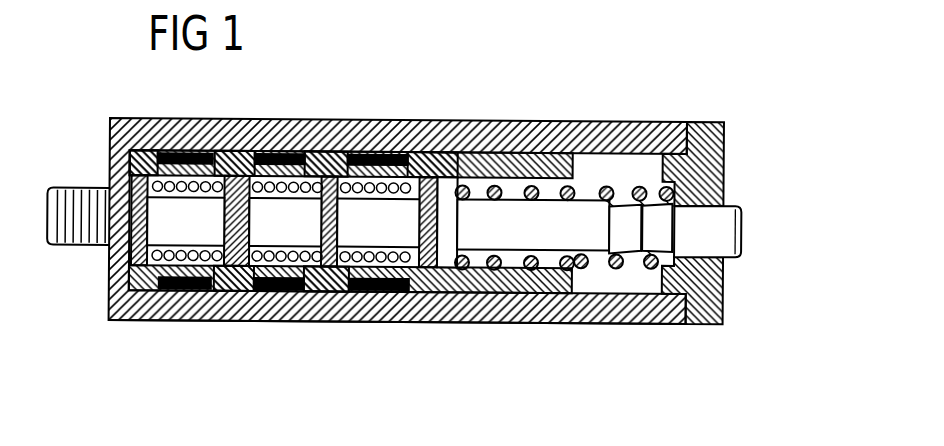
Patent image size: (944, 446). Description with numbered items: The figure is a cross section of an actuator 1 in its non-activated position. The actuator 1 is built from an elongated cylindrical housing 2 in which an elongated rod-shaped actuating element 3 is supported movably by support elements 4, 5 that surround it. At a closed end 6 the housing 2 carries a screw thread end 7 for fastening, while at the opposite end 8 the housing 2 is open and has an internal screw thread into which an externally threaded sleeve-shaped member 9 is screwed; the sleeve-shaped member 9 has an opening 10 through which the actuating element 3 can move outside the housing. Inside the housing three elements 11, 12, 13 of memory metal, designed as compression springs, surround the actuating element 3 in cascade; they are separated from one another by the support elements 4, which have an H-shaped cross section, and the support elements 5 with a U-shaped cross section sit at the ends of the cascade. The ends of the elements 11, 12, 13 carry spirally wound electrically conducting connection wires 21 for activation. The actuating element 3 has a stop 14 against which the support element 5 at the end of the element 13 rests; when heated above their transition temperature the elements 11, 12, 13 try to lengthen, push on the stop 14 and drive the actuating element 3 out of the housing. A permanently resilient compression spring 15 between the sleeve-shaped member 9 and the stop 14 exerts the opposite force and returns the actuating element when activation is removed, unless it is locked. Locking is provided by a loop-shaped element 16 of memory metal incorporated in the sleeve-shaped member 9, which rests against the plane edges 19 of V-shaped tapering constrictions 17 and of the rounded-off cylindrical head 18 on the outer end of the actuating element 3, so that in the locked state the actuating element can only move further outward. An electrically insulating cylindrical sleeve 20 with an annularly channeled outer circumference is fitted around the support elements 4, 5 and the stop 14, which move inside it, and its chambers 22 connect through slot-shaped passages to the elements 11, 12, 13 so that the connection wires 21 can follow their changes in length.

The actuator 1 is at (328, 333).
The housing 2 is at (512, 120).
The actuating element 3 is at (492, 240).
The support elements 4 is at (222, 172).
The support elements 5 is at (119, 320).
The closed end 6 is at (100, 137).
The screw thread end 7 is at (82, 247).
The opposite end 8 is at (745, 143).
The sleeve-shaped member 9 is at (712, 155).
The opening 10 is at (735, 258).
The element of memory metal 11 is at (213, 253).
The element of memory metal 12 is at (240, 290).
The element of memory metal 13 is at (338, 275).
The stop 14 is at (450, 180).
The compression spring 15 is at (532, 268).
The loop-shaped element 16 is at (700, 292).
The tapering constrictions 17 is at (620, 203).
The head 18 is at (722, 226).
The plane edges 19 is at (604, 183).
The insulating sleeve 20 is at (143, 157).
The connection wires 21 is at (204, 150).
The chambers 22 is at (168, 155).